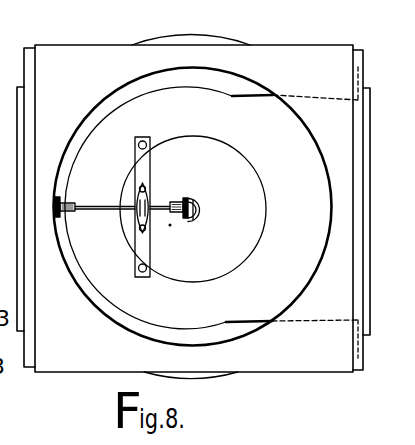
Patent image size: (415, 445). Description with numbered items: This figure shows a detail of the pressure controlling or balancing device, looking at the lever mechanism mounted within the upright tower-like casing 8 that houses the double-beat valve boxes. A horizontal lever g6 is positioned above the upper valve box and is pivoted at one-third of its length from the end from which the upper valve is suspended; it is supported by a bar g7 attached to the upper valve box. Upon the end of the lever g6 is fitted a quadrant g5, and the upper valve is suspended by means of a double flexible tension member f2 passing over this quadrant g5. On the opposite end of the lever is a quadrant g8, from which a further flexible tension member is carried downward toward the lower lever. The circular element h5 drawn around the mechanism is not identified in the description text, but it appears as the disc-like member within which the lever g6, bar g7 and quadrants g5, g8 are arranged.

The upright casing or tower-like structure 8 is at (197, 194).
The quadrant g8 is at (63, 207).
The horizontal lever g6 is at (100, 210).
The bar g7 is at (158, 238).
The quadrant g5 is at (185, 200).
The inner disc h5 is at (278, 191).
The double flexible tension member f2 is at (197, 218).